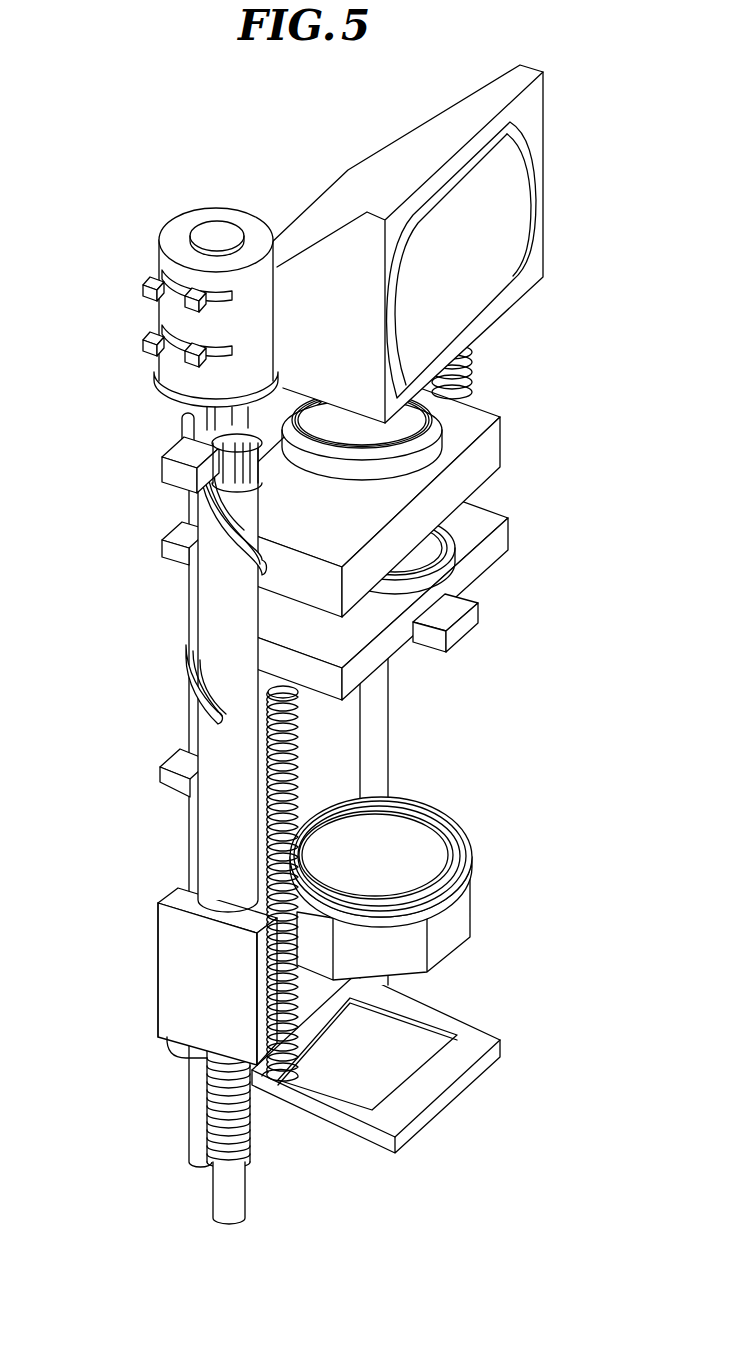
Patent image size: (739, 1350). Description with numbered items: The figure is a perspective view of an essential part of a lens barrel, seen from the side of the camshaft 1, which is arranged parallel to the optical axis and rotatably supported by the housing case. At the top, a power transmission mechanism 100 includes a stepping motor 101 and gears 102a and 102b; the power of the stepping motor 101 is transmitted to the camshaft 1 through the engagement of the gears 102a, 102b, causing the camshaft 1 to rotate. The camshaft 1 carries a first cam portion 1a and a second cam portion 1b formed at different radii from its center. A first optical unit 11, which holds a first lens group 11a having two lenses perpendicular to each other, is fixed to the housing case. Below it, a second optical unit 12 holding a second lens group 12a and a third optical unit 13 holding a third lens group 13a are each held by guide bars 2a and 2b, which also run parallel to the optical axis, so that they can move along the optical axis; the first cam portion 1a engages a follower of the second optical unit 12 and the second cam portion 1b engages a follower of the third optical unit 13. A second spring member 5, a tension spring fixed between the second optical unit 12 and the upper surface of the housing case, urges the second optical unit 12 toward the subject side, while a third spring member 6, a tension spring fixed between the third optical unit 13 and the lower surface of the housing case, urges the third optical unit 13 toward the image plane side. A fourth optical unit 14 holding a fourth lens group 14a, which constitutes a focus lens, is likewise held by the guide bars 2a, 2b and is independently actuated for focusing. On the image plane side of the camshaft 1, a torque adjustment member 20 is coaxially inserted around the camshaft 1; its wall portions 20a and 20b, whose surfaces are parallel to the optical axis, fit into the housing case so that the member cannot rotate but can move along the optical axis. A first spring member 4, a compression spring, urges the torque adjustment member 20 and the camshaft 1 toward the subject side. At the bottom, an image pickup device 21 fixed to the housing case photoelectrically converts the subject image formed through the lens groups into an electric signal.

The power transmission mechanism 100 is at (118, 350).
The stepping motor 101 is at (184, 224).
The gear 102a is at (184, 428).
The gear 102b is at (215, 463).
The camshaft 1 is at (181, 678).
The first cam portion 1a is at (238, 534).
The second cam portion 1b is at (242, 702).
The first optical unit 11 is at (441, 244).
The first lens group 11a is at (513, 233).
The second spring member 5 is at (472, 369).
The second optical unit 12 is at (492, 457).
The second lens group 12a is at (413, 420).
The third optical unit 13 is at (480, 519).
The third lens group 13a is at (413, 562).
The guide bar 2a is at (380, 693).
The guide bar 2b is at (192, 1132).
The third spring member 6 is at (292, 760).
The fourth optical unit 14 is at (409, 877).
The fourth lens group 14a is at (423, 840).
The torque adjustment member 20 is at (287, 976).
The wall portion 20a is at (160, 940).
The wall portion 20b is at (280, 962).
The first spring member 4 is at (207, 1085).
The image pickup device 21 is at (410, 1067).